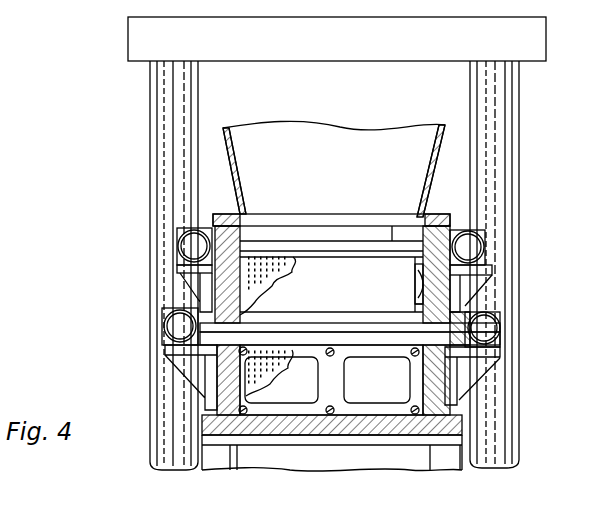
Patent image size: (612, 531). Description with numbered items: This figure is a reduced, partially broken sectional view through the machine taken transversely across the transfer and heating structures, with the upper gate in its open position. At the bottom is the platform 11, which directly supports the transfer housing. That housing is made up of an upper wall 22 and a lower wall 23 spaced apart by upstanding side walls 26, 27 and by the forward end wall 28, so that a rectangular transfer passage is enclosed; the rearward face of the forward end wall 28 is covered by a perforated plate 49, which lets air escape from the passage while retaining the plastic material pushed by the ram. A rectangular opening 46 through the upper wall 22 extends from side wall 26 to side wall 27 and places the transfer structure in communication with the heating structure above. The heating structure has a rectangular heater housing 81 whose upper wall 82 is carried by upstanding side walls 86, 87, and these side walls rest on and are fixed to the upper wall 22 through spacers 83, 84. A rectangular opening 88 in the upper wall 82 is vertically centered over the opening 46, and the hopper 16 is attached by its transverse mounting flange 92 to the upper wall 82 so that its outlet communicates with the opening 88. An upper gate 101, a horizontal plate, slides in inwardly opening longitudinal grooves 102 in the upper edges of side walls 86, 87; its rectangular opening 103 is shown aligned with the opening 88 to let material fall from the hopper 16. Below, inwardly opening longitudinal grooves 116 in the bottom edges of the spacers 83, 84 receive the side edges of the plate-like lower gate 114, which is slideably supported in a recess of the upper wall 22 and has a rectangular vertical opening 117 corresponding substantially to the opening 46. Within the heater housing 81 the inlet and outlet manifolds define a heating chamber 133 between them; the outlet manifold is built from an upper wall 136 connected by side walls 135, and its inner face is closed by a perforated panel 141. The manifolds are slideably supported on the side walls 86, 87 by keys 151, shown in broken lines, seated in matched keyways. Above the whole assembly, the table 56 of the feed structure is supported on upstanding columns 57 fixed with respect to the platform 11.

The table 56 is at (337, 39).
The columns 57 is at (506, 107).
The hopper 16 is at (334, 169).
The rectangular opening 88 is at (243, 232).
The mounting flange 92 is at (428, 221).
The rectangular opening of upper gate 103 is at (392, 226).
The upper wall of outlet manifold 136 is at (355, 256).
The perforated panel 141 is at (292, 270).
The rectangular vertical opening of lower gate 117 is at (263, 325).
The side walls of outlet manifold 135 is at (415, 268).
The keys 151 is at (415, 294).
The heating chamber 133 is at (412, 303).
The side wall of transfer housing 26 is at (250, 398).
The rectangular opening 46 is at (410, 344).
The perforated plate 49 is at (305, 346).
The side wall of transfer housing 27 is at (430, 390).
The lower wall of transfer housing 23 is at (455, 430).
The platform 11 is at (293, 440).
The forward end wall 28 is at (268, 412).
The upper gate 101 is at (212, 222).
The longitudinal grooves 102 is at (190, 266).
The side wall of heater housing 86 is at (200, 291).
The upper wall of heater housing 82 is at (452, 231).
The heater housing 81 is at (470, 266).
The side wall of heater housing 87 is at (478, 284).
The spacer 84 is at (480, 306).
The spacer 83 is at (168, 314).
The upper wall of transfer housing 22 is at (500, 333).
The lower gate 114 is at (200, 347).
The longitudinal grooves 116 is at (200, 357).